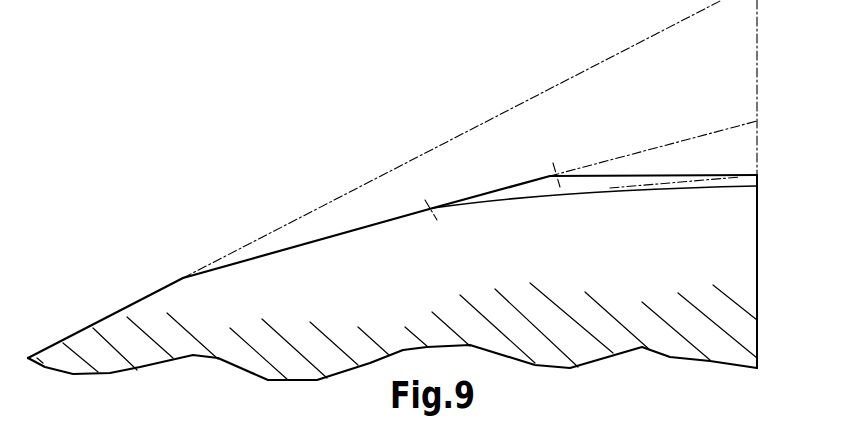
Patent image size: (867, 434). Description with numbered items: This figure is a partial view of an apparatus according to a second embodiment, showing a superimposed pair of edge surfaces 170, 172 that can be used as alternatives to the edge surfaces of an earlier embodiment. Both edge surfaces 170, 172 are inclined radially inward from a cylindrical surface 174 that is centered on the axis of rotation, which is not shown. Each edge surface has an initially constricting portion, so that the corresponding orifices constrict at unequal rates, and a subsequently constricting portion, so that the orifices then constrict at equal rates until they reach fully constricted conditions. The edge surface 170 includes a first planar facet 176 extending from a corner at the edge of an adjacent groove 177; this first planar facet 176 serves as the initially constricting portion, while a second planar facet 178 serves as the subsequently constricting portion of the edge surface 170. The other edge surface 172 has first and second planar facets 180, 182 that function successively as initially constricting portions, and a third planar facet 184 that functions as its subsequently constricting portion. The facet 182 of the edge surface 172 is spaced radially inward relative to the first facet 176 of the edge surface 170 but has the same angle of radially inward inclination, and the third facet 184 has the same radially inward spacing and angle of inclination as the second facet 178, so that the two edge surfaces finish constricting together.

The edge surface 170 is at (737, 157).
The edge surface 172 is at (742, 175).
The cylindrical surface 174 is at (120, 307).
The first planar facet 176 is at (617, 175).
The groove 177 is at (810, 264).
The second planar facet 178 is at (493, 191).
The first planar facet 180 is at (680, 186).
The second planar facet 182 is at (525, 197).
The third planar facet 184 is at (372, 226).